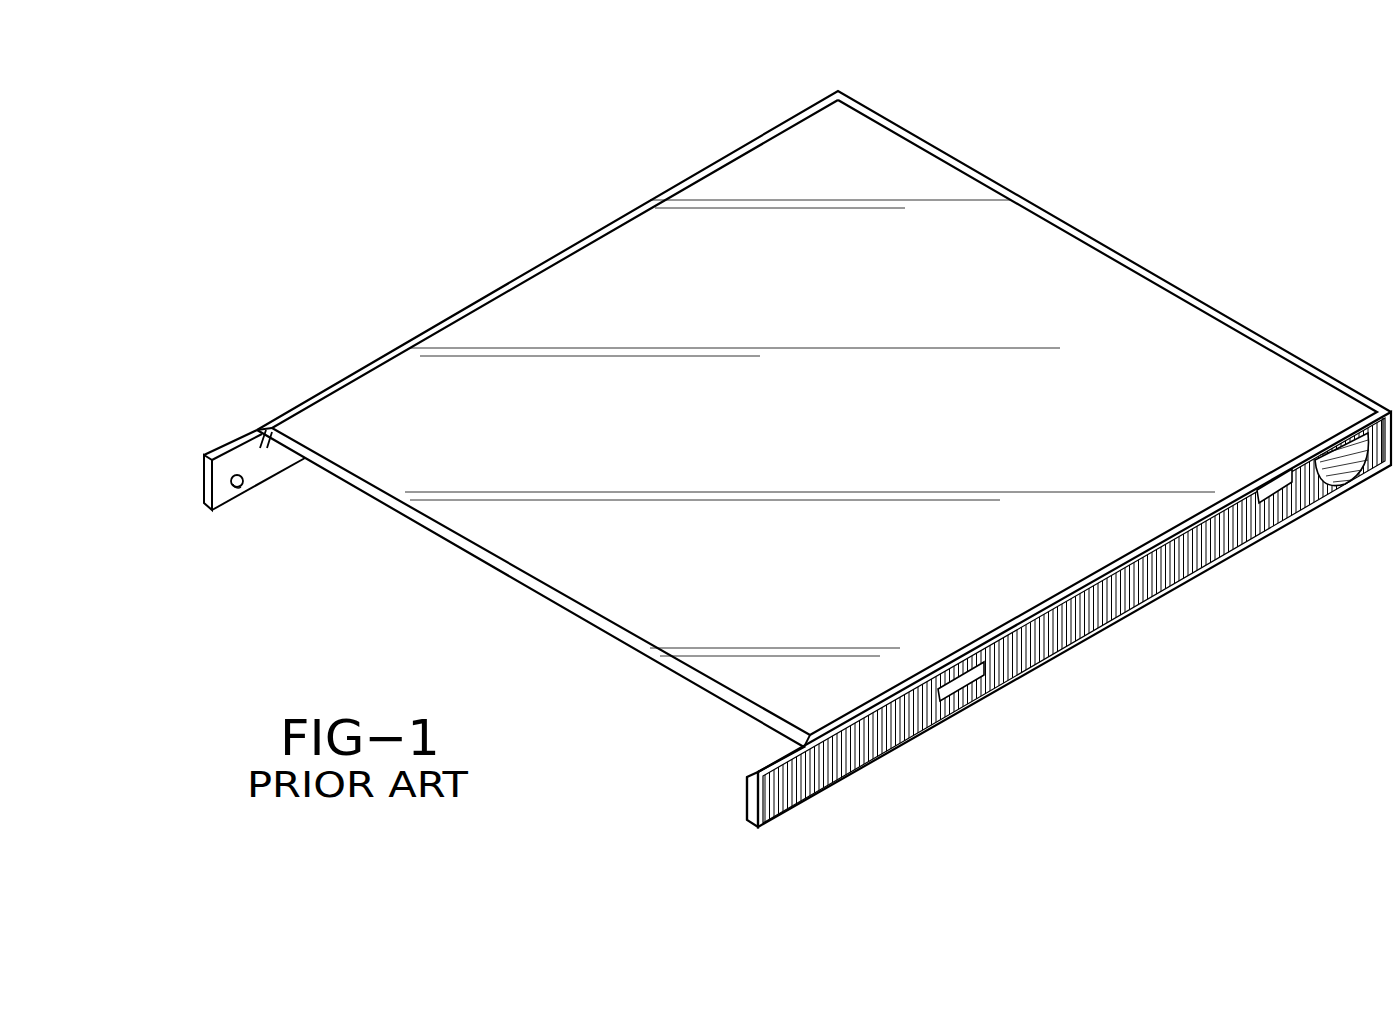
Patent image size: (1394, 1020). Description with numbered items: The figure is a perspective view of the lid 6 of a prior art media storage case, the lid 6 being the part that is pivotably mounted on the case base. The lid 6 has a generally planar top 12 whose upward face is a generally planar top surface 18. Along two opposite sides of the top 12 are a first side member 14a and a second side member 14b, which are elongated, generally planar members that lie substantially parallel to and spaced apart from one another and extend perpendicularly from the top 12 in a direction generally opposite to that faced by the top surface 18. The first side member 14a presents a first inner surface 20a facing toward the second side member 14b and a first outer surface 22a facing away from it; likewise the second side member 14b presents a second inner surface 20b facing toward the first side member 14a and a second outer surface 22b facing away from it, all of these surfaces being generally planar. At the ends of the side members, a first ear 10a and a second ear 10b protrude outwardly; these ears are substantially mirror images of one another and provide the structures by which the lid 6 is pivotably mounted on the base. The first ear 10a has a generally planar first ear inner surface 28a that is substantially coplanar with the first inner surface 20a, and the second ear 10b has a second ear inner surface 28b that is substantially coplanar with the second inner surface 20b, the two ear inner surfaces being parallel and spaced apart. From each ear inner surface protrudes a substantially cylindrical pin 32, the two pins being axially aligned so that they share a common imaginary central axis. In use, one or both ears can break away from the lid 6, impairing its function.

The lid 6 is at (1098, 207).
The top 12 is at (1128, 258).
The top surface 18 is at (1170, 322).
The first ear 10a is at (219, 440).
The second ear 10b is at (795, 835).
The first side member 14a is at (290, 462).
The second side member 14b is at (1074, 620).
The first inner surface 20a is at (262, 426).
The second inner surface 20b is at (788, 757).
The first outer surface 22a is at (275, 432).
The second outer surface 22b is at (913, 720).
The first ear inner surface 28a is at (222, 500).
The second ear inner surface 28b is at (747, 800).
The pin 32 is at (240, 488).